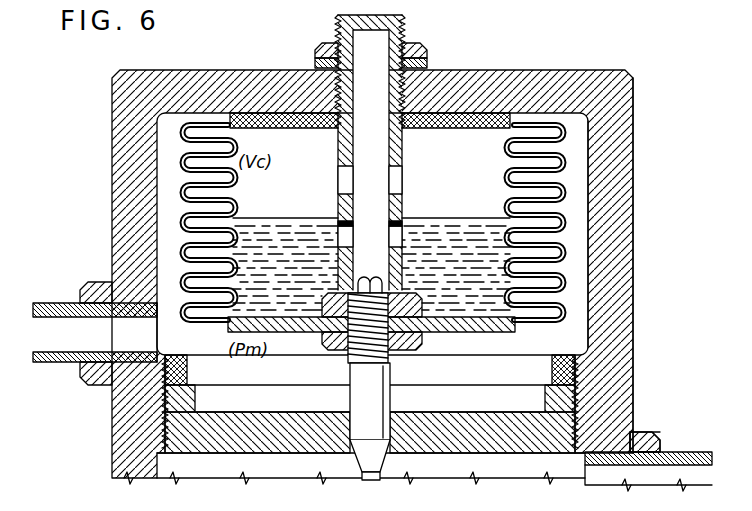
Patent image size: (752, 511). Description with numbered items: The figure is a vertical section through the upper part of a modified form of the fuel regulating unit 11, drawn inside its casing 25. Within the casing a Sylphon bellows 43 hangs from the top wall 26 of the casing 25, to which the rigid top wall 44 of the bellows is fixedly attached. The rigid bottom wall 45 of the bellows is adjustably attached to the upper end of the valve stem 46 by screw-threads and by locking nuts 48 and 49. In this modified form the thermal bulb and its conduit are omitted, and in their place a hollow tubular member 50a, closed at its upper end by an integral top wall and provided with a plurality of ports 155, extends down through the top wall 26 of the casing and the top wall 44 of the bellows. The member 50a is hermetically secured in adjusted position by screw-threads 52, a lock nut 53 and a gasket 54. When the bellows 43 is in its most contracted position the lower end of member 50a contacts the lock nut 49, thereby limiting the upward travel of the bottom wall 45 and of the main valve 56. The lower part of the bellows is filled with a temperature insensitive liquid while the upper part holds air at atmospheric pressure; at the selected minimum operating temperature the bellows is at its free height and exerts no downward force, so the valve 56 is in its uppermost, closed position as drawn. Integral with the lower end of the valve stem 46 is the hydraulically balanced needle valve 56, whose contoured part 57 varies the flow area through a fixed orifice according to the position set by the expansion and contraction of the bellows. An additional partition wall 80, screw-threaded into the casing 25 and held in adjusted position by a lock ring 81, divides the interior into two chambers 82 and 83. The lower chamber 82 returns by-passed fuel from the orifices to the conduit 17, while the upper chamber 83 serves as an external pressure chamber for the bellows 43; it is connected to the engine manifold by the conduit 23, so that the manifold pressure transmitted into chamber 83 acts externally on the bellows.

The fuel regulating unit 11 is at (640, 70).
The conduit 17 is at (690, 452).
The conduit 23 is at (48, 320).
The casing 25 is at (617, 260).
The top wall of casing 26 is at (546, 74).
The Sylphon bellows 43 is at (558, 193).
The top wall of bellows 44 is at (492, 112).
The bottom wall of bellows 45 is at (270, 336).
The valve stem 46 is at (380, 395).
The locking nut 48 is at (412, 348).
The lock nut 49 is at (420, 315).
The hollow tubular member 50a is at (405, 25).
The screw-threads 52 is at (330, 72).
The lock nut 53 is at (428, 50).
The gasket 54 is at (428, 63).
The needle valve 56 is at (388, 470).
The contoured part 57 is at (371, 478).
The partition wall 80 is at (485, 422).
The lock ring 81 is at (183, 358).
The chamber 82 is at (278, 478).
The chamber 83 is at (250, 408).
The ports 155 is at (343, 236).